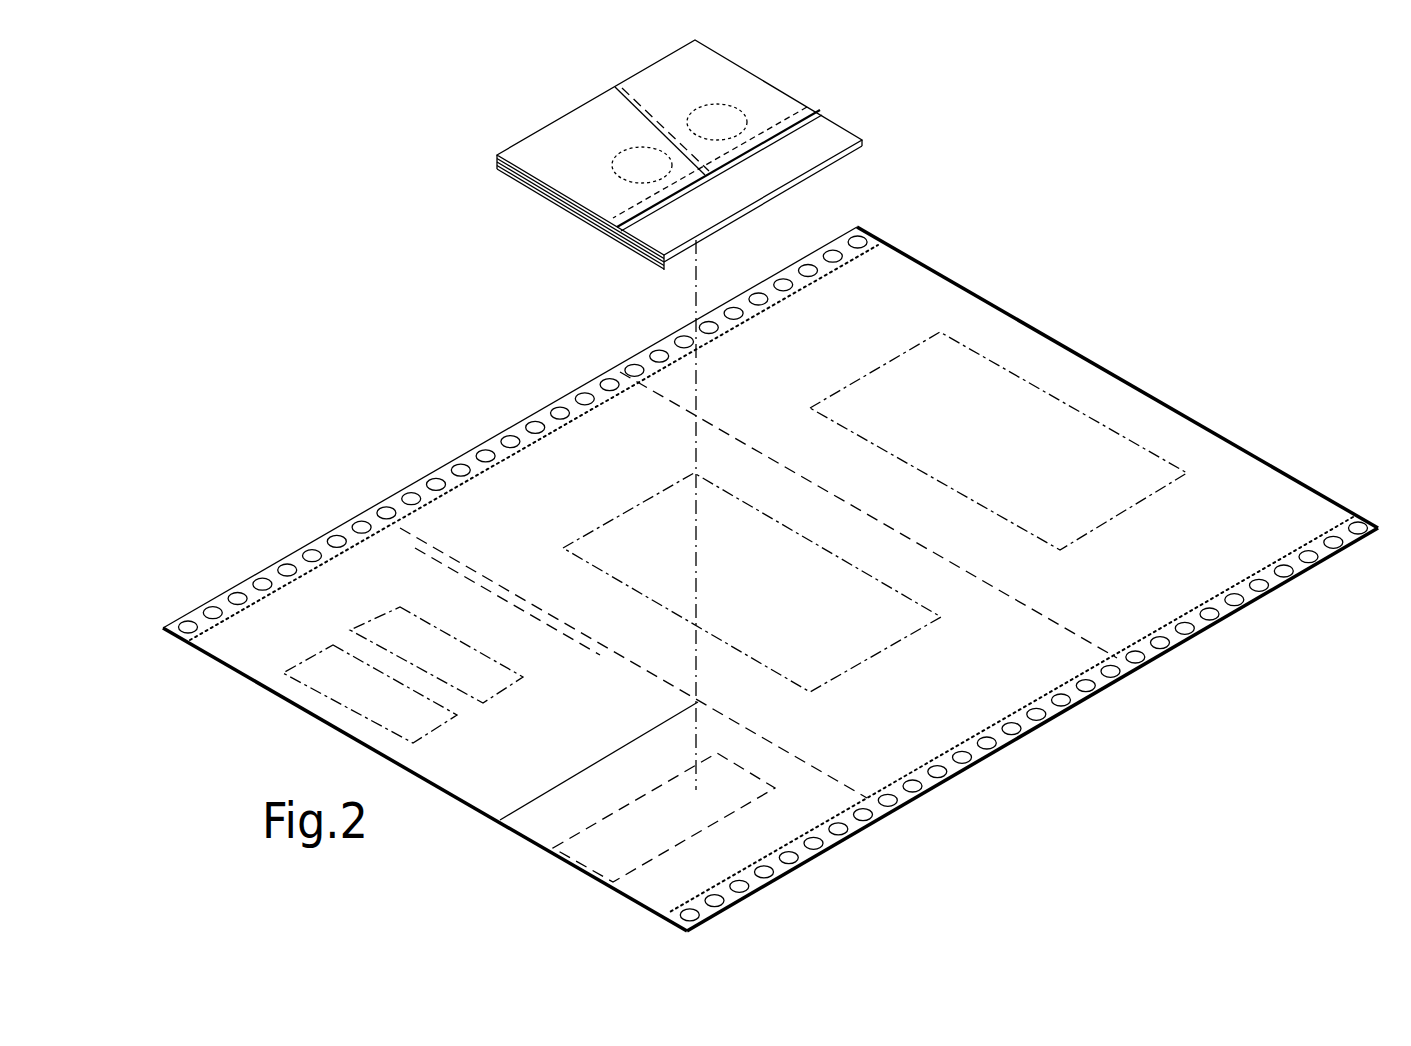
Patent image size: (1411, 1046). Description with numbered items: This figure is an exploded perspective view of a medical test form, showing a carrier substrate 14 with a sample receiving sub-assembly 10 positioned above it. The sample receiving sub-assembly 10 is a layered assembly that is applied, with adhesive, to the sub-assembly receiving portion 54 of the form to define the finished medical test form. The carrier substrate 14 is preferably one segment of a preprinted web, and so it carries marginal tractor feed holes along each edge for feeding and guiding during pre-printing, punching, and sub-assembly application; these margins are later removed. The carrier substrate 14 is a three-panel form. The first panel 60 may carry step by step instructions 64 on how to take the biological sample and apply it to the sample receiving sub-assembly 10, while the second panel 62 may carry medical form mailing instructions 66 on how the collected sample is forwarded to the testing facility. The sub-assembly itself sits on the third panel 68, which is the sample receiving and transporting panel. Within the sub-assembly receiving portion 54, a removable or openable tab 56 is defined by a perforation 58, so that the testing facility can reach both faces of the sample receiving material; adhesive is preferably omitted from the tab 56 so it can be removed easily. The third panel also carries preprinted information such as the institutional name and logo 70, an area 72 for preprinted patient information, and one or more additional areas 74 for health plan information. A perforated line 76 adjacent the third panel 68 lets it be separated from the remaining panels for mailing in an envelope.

The sample receiving sub-assembly 10 is at (722, 151).
The carrier substrate 14 is at (770, 559).
The sub-assembly receiving portion 54 is at (785, 827).
The removable tab 56 is at (583, 851).
The perforation 58 is at (653, 790).
The first panel 60 is at (1197, 577).
The second panel 62 is at (884, 226).
The step by step instructions 64 is at (1367, 501).
The medical form mailing instructions 66 is at (894, 237).
The third panel 68 is at (320, 600).
The institutional name and logo 70 is at (413, 551).
The area for preprinted patient information 72 is at (398, 607).
The additional area for health plan information 74 is at (317, 655).
The perforated line 76 is at (920, 793).